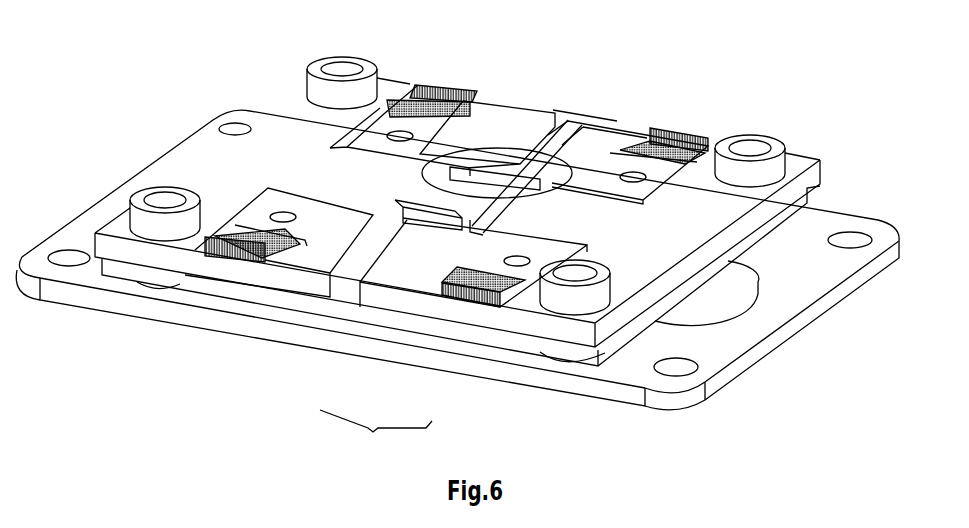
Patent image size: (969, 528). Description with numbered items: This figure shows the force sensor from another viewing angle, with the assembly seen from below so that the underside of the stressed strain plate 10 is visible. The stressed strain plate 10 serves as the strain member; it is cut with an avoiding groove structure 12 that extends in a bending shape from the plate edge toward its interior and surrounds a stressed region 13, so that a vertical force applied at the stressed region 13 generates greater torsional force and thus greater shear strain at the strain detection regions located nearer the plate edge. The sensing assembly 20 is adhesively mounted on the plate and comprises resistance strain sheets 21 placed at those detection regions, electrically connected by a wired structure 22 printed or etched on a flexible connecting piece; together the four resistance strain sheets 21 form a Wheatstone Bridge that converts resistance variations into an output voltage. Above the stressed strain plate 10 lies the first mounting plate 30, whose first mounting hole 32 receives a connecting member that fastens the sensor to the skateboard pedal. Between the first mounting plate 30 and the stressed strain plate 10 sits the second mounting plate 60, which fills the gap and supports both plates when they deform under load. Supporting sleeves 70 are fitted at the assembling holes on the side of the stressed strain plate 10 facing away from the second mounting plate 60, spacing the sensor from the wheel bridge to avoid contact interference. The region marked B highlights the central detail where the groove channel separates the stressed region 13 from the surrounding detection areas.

The stressed strain plate 10 is at (627, 237).
The avoiding groove structure 12 is at (256, 190).
The stressed region 13 is at (282, 205).
The sensing assembly 20 is at (376, 439).
The resistance strain sheet 21 is at (240, 250).
The wired structure 22 is at (453, 193).
The first mounting plate 30 is at (795, 281).
The first mounting hole 32 is at (228, 128).
The second mounting plate 60 is at (690, 283).
The supporting sleeve 70 is at (722, 133).
The detail region B is at (492, 143).